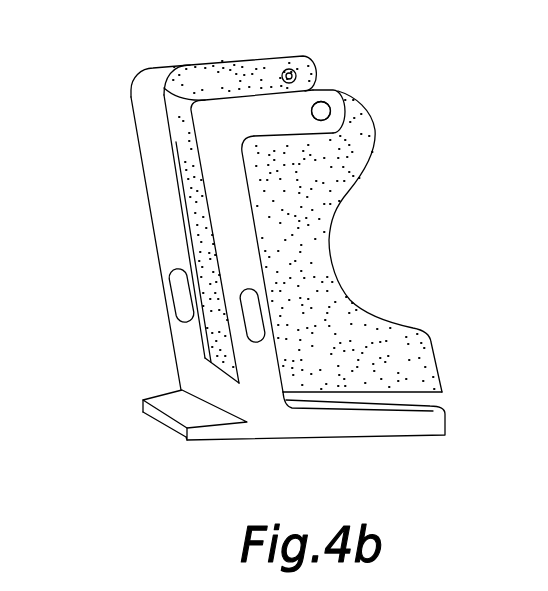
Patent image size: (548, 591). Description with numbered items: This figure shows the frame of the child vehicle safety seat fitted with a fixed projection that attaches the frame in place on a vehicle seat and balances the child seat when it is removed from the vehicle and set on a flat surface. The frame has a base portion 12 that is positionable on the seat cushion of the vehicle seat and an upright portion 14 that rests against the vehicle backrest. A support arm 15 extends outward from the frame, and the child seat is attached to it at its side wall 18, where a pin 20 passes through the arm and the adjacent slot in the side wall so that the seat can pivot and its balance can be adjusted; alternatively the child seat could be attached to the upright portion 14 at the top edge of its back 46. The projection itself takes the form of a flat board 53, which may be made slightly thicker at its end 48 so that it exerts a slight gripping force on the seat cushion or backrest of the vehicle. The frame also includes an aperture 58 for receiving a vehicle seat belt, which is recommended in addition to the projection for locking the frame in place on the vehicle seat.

The base portion 12 is at (318, 426).
The upright portion 14 is at (145, 196).
The support arm 15 is at (320, 100).
The side wall 18 is at (307, 307).
The pin 20 is at (328, 108).
The back 46 is at (173, 115).
The end 48 is at (180, 432).
The flat board 53 is at (187, 412).
The aperture 58 is at (177, 295).